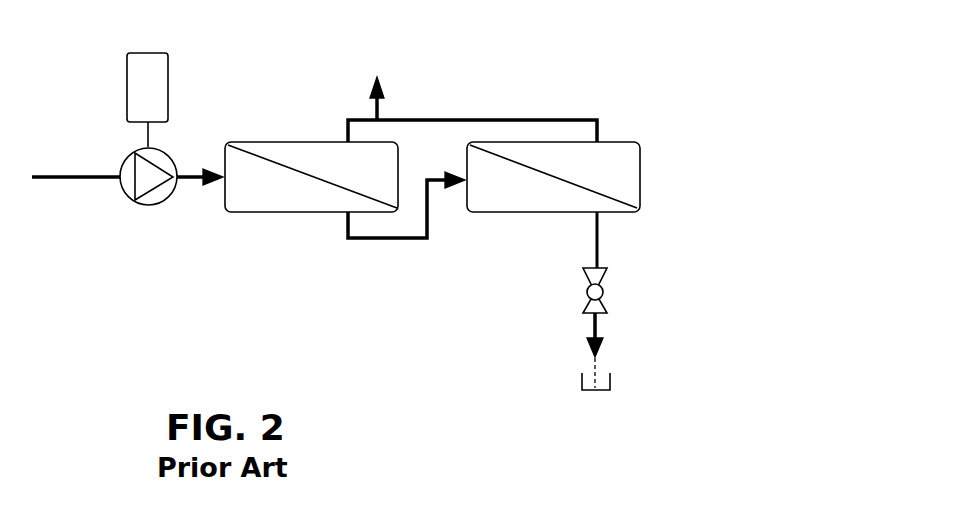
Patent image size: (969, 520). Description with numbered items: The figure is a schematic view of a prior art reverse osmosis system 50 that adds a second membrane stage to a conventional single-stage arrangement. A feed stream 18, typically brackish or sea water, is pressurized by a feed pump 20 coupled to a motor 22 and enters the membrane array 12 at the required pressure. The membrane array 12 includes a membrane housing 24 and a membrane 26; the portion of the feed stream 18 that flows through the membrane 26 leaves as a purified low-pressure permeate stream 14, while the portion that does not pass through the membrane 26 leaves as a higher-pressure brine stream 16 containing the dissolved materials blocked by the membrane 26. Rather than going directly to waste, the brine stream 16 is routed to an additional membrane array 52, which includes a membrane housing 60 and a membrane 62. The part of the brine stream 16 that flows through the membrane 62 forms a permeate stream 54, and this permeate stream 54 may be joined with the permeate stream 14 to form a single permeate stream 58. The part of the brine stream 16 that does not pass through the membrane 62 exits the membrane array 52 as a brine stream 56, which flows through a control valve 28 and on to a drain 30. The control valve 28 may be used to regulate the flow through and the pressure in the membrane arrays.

The reverse osmosis system 50 is at (695, 78).
The membrane array 12 is at (282, 134).
The permeate stream 14 is at (357, 118).
The brine stream 16 is at (382, 240).
The feed stream 18 is at (195, 173).
The feed pump 20 is at (125, 197).
The motor 22 is at (148, 53).
The membrane housing 24 is at (252, 213).
The membrane 26 is at (307, 172).
The control valve 28 is at (604, 292).
The drain 30 is at (612, 378).
The membrane array 52 is at (627, 134).
The permeate stream 54 is at (577, 118).
The brine stream 56 is at (598, 235).
The single permeate stream 58 is at (380, 107).
The membrane housing 60 is at (495, 213).
The membrane 62 is at (592, 187).